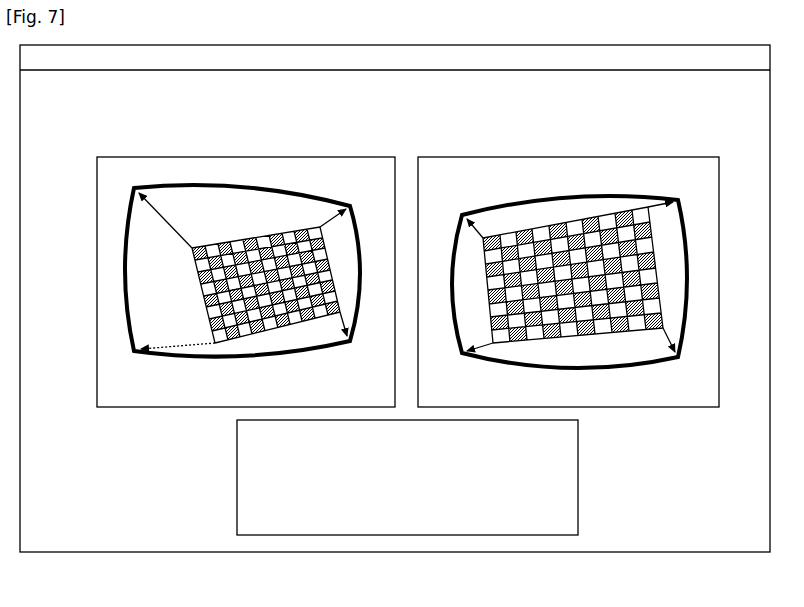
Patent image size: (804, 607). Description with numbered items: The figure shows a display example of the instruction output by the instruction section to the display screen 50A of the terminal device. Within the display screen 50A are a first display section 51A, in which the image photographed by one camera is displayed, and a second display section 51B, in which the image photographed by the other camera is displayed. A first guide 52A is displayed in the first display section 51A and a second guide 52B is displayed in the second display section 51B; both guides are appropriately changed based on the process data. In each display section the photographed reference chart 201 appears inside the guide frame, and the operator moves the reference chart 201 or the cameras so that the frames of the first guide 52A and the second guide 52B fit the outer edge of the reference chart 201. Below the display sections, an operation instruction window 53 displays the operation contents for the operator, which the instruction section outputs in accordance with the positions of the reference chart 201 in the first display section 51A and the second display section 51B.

The display screen 50A is at (183, 554).
The first display section 51A is at (270, 157).
The second display section 51B is at (584, 157).
The first guide 52A is at (157, 180).
The second guide 52B is at (496, 208).
The reference chart 201 is at (252, 335).
The operation instruction window 53 is at (440, 537).